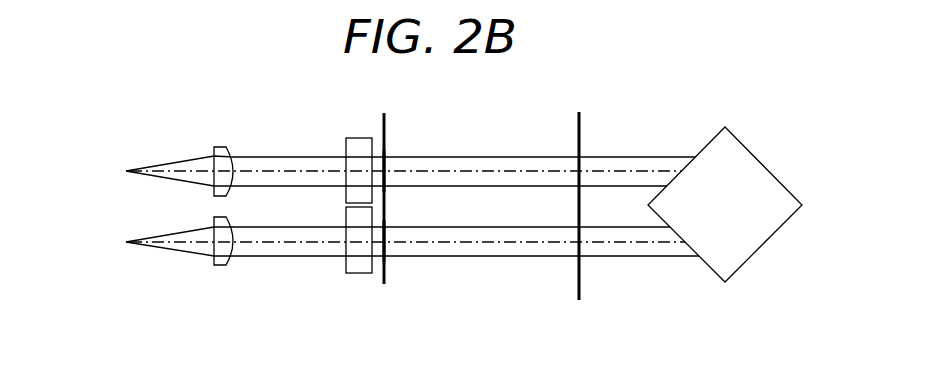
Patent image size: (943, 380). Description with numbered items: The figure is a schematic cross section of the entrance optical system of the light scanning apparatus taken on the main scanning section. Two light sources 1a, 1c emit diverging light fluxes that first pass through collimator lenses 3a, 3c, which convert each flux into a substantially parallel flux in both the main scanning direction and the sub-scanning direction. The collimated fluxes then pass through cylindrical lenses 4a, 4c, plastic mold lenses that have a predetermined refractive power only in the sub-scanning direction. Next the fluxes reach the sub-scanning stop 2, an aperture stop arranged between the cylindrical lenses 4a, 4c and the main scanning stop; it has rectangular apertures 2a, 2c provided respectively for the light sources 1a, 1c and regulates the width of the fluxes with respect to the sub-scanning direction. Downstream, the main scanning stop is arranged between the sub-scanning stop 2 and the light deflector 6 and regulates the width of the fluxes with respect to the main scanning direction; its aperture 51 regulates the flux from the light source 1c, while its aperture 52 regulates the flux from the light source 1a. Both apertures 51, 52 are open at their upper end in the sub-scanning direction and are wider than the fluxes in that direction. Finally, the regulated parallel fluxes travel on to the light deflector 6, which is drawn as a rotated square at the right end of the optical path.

The light source 1a is at (126, 171).
The light source 1c is at (126, 242).
The sub-scanning stop 2 is at (384, 286).
The aperture 2a is at (387, 177).
The aperture 2c is at (387, 232).
The collimator lens 3a is at (218, 147).
The collimator lens 3c is at (218, 266).
The cylindrical lens 4a is at (358, 142).
The cylindrical lens 4c is at (358, 272).
The aperture 51 is at (575, 170).
The aperture 52 is at (575, 242).
The light deflector 6 is at (752, 162).